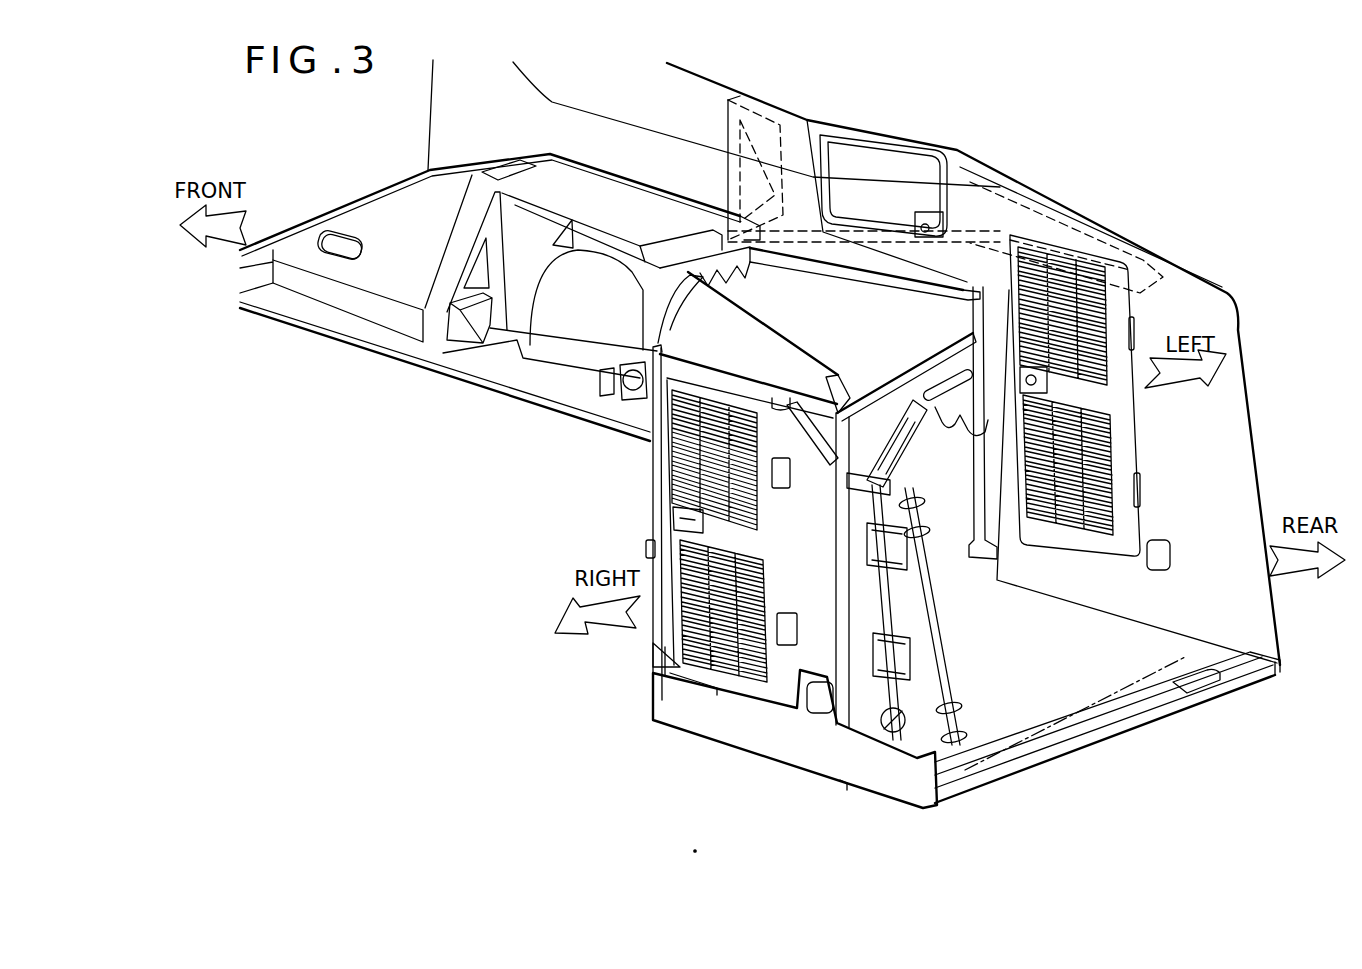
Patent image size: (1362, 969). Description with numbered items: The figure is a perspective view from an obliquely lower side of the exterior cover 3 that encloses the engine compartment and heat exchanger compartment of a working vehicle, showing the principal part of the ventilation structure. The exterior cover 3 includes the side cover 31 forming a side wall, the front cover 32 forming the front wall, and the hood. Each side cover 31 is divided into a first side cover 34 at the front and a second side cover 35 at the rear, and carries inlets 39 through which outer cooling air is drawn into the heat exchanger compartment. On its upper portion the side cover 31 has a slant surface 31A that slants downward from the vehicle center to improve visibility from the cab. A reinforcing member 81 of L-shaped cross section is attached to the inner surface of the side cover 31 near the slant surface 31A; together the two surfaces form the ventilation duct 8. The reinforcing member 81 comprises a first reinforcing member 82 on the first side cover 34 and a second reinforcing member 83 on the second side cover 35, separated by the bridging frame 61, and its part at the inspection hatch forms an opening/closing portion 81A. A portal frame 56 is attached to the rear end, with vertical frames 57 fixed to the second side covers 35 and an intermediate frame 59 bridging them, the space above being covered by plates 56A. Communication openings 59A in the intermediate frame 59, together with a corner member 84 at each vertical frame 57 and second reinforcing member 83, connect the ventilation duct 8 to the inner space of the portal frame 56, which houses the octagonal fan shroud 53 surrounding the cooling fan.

The exterior cover 3 is at (1101, 154).
The ventilation duct 8 is at (510, 335).
The side cover 31 is at (1092, 224).
The slant surface 31A is at (713, 100).
The front cover 32 is at (308, 200).
The first side cover 34 is at (445, 382).
The second side cover 35 is at (1057, 582).
The inlets 39 is at (1100, 320).
The fan shroud 53 is at (1060, 722).
The portal frame 56 is at (889, 409).
The plates 56A is at (860, 428).
The vertical frames 57 is at (865, 615).
The intermediate frame 59 is at (900, 452).
The communication openings 59A is at (968, 378).
The bridging frame 61 is at (703, 282).
The reinforcing member 81 is at (1031, 76).
The opening/closing portion 81A is at (538, 345).
The first reinforcing member 82 is at (930, 165).
The second reinforcing member 83 is at (1010, 210).
The corner member 84 is at (825, 398).